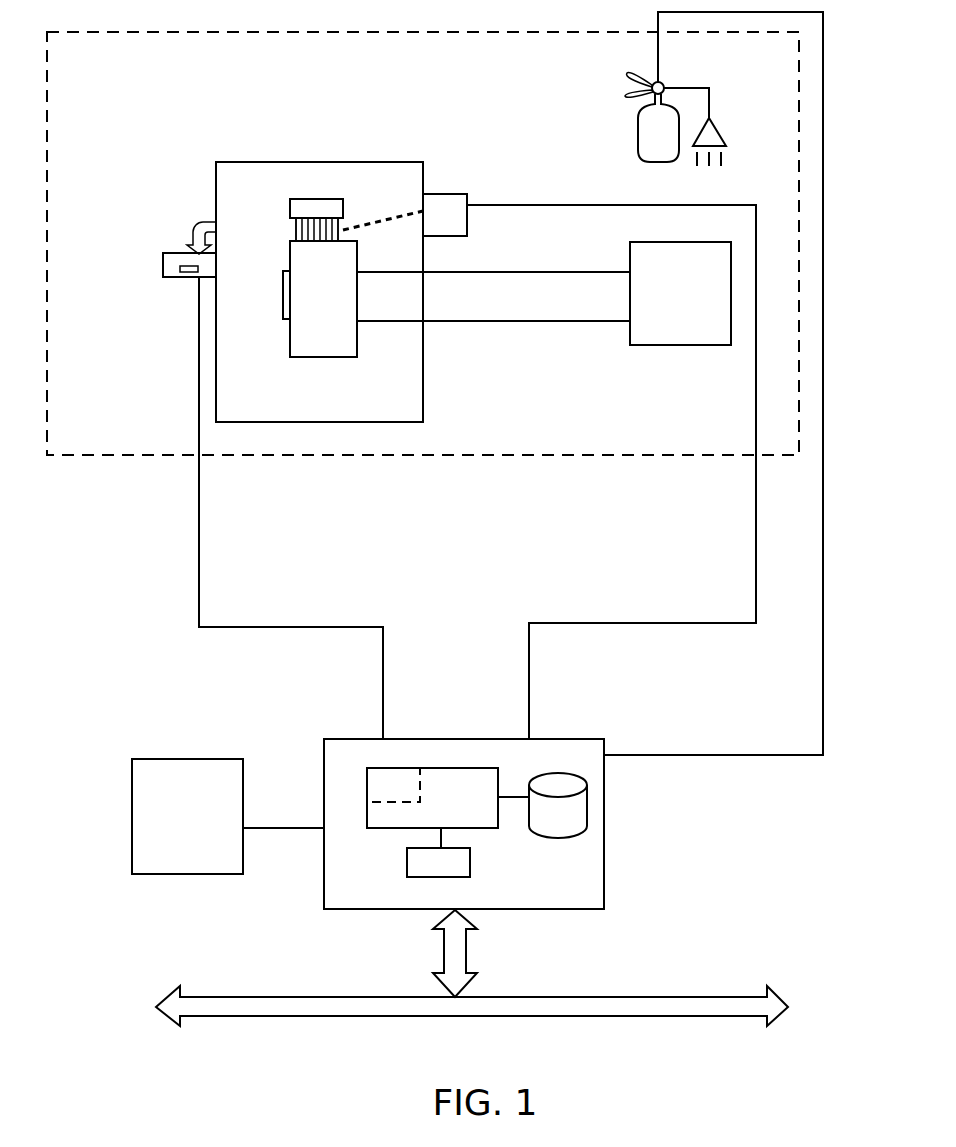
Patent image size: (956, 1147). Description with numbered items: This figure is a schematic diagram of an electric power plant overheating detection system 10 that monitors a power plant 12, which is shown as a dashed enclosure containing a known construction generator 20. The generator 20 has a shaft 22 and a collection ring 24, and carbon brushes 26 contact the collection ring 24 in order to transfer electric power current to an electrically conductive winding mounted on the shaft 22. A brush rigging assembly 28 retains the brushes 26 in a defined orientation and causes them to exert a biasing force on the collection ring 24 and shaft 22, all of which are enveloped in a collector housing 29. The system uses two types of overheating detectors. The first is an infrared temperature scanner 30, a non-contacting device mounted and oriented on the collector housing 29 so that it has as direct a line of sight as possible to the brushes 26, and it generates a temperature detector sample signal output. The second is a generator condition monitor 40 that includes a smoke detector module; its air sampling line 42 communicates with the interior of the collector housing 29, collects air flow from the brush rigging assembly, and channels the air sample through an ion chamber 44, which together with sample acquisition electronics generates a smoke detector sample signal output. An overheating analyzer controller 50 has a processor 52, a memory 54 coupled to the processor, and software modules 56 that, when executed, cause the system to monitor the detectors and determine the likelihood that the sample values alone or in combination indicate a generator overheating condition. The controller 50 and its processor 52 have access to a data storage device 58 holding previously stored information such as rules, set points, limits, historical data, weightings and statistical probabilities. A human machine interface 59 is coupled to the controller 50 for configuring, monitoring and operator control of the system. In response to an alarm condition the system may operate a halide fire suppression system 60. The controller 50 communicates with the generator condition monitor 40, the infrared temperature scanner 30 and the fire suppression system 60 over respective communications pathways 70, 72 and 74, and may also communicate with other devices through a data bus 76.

The overheating detection system 10 is at (110, 669).
The power plant 12 is at (140, 474).
The generator 20 is at (622, 242).
The shaft 22 is at (468, 308).
The collection ring 24 is at (318, 332).
The carbon brushes 26 is at (296, 236).
The brush rigging assembly 28 is at (330, 208).
The collector housing 29 is at (326, 150).
The infrared temperature scanner 30 is at (455, 183).
The generator condition monitor 40 is at (156, 294).
The air sampling line 42 is at (190, 232).
The ion chamber 44 is at (163, 262).
The overheating analyzer controller 50 is at (614, 867).
The processor 52 is at (483, 785).
The memory 54 is at (418, 863).
The software modules 56 is at (380, 787).
The data storage device 58 is at (575, 817).
The human machine interface 59 is at (180, 782).
The halide fire suppression system 60 is at (668, 74).
The communications pathway 70 is at (197, 588).
The communications pathway 72 is at (640, 623).
The communications pathway 74 is at (738, 755).
The data bus 76 is at (640, 997).